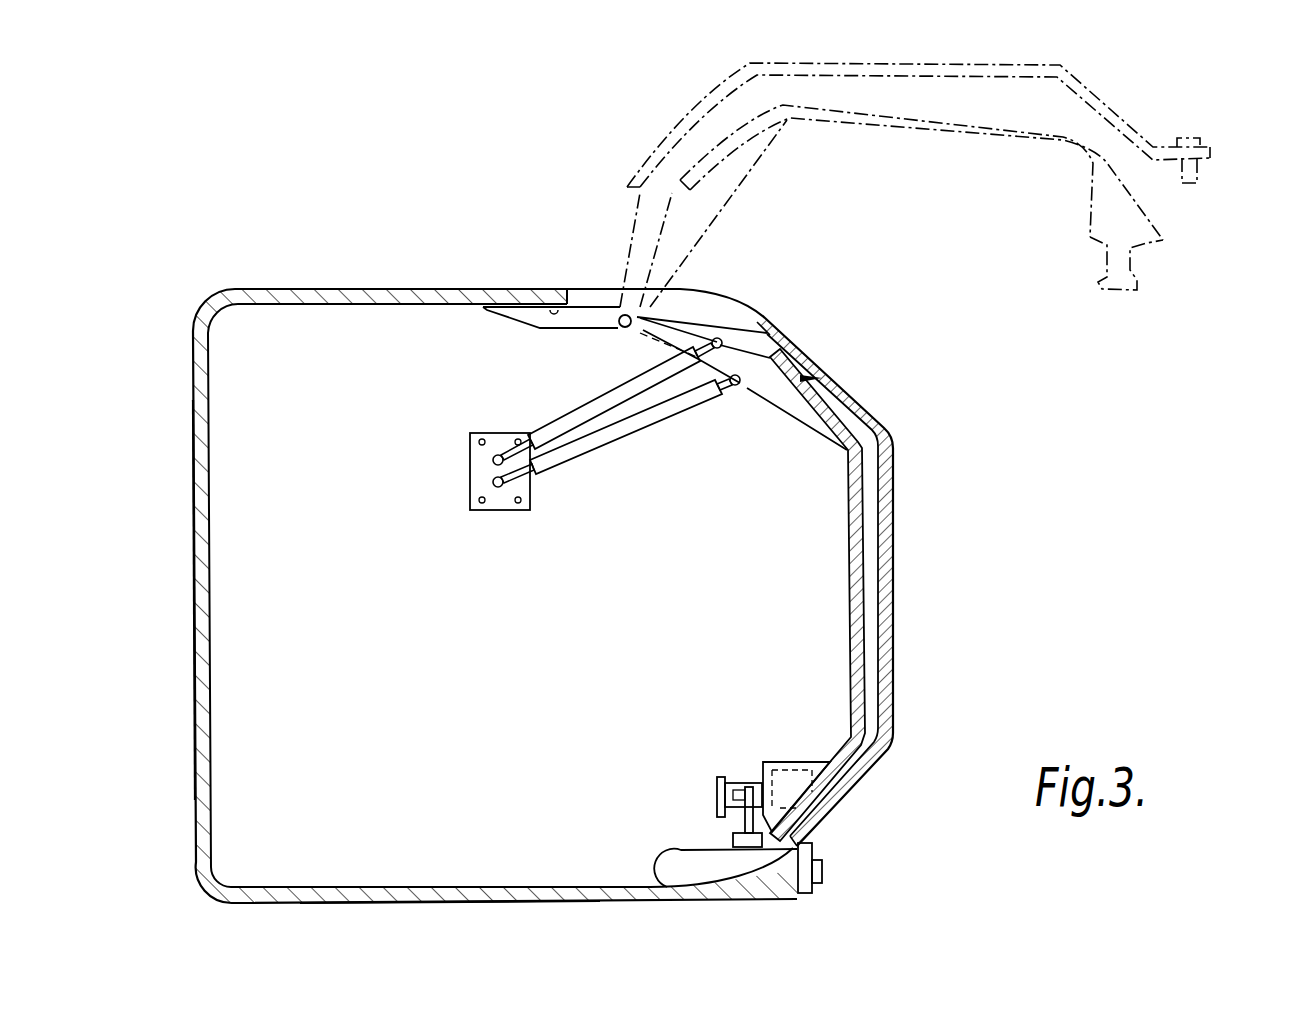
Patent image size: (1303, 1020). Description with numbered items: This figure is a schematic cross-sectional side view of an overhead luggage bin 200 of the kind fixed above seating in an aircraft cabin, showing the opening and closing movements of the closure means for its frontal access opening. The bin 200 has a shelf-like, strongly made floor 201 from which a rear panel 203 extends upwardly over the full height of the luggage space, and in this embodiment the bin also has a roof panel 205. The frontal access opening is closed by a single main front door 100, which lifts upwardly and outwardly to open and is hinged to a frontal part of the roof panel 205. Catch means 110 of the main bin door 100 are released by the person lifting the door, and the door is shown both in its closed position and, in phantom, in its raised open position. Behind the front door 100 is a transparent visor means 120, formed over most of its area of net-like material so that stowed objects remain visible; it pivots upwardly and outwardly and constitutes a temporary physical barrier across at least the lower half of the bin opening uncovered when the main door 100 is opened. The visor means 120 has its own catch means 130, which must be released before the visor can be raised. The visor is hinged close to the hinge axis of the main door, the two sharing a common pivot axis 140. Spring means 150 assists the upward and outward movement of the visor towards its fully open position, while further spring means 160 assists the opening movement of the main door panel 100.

The main front door 100 is at (700, 103).
The catch means 110 is at (823, 872).
The transparent visor means 120 is at (958, 142).
The catch means 130 is at (733, 783).
The common pivot axis 140 is at (683, 287).
The spring means 150 is at (676, 412).
The further spring means 160 is at (587, 419).
The luggage bin 200 is at (354, 268).
The floor 201 is at (397, 886).
The rear panel 203 is at (194, 565).
The roof panel 205 is at (445, 289).